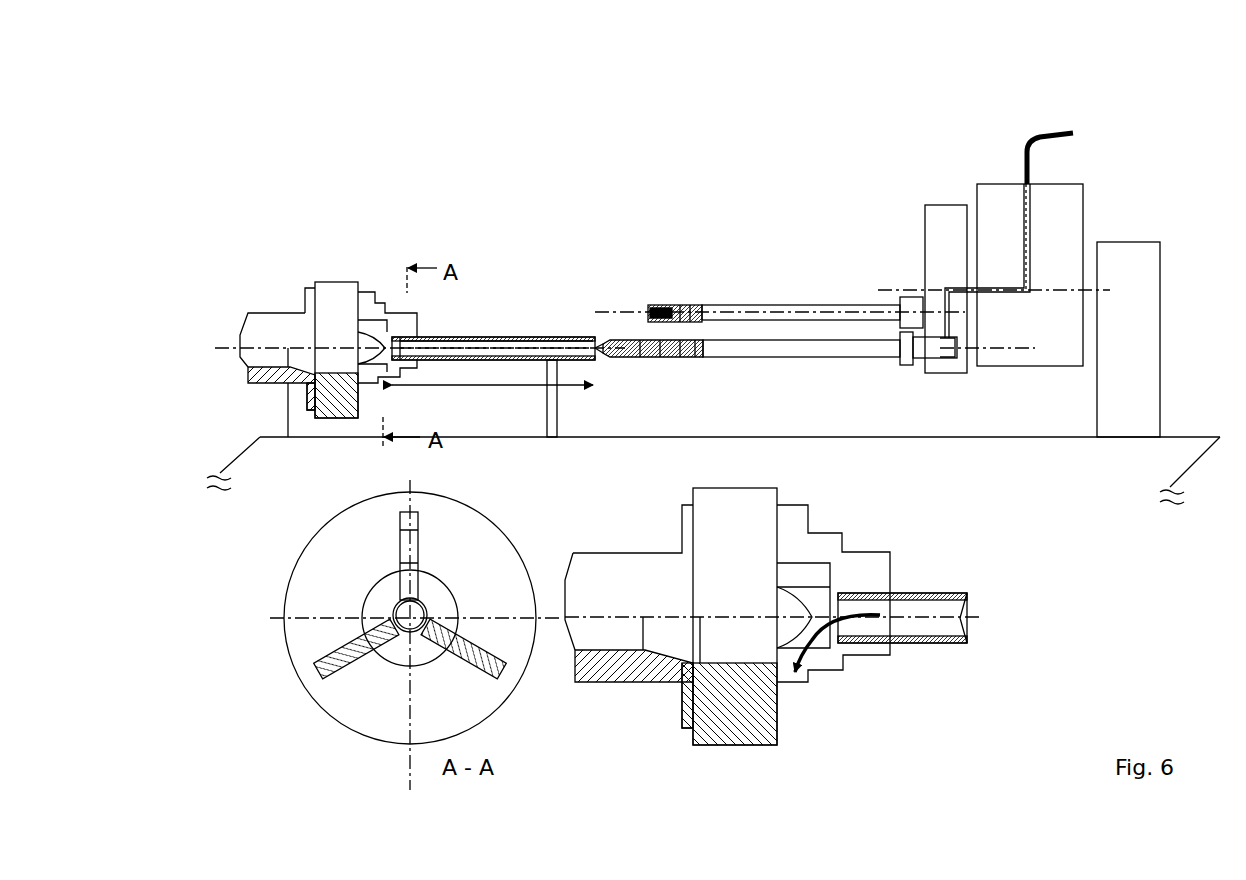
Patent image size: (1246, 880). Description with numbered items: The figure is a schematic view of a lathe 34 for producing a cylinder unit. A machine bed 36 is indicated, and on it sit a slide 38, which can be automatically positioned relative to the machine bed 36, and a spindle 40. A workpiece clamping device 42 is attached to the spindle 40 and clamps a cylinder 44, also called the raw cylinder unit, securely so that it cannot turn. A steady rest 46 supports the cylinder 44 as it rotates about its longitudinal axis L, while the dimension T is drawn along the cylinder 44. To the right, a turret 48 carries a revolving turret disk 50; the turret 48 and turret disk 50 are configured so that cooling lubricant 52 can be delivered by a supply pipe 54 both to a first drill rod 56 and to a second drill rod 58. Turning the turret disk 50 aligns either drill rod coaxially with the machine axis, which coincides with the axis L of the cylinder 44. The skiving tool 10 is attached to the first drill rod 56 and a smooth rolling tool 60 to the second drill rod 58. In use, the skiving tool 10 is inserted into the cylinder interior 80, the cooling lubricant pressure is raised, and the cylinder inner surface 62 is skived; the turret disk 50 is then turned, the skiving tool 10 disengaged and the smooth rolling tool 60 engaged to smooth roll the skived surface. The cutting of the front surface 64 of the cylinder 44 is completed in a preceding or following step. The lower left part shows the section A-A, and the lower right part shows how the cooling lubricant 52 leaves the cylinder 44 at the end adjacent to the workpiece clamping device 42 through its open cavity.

The lathe 34 is at (235, 177).
The spindle 40 is at (347, 290).
The workpiece clamping device 42 is at (382, 297).
The cylinder 44 is at (460, 335).
The cylinder inner surface 62 is at (500, 352).
The cylinder interior 80 is at (473, 347).
The front surface 64 is at (613, 338).
The smooth rolling tool 60 is at (677, 307).
The second drill rod 58 is at (753, 303).
The first drill rod 56 is at (800, 355).
The skiving tool 10 is at (695, 358).
The steady rest 46 is at (548, 400).
The turret disk 50 is at (958, 202).
The turret 48 is at (1072, 202).
The slide 38 is at (1137, 290).
The machine bed 36 is at (1158, 448).
The supply pipe 54 is at (1050, 135).
The cooling lubricant 52 is at (1038, 198).
The longitudinal axis L is at (556, 345).
The depth T is at (462, 385).